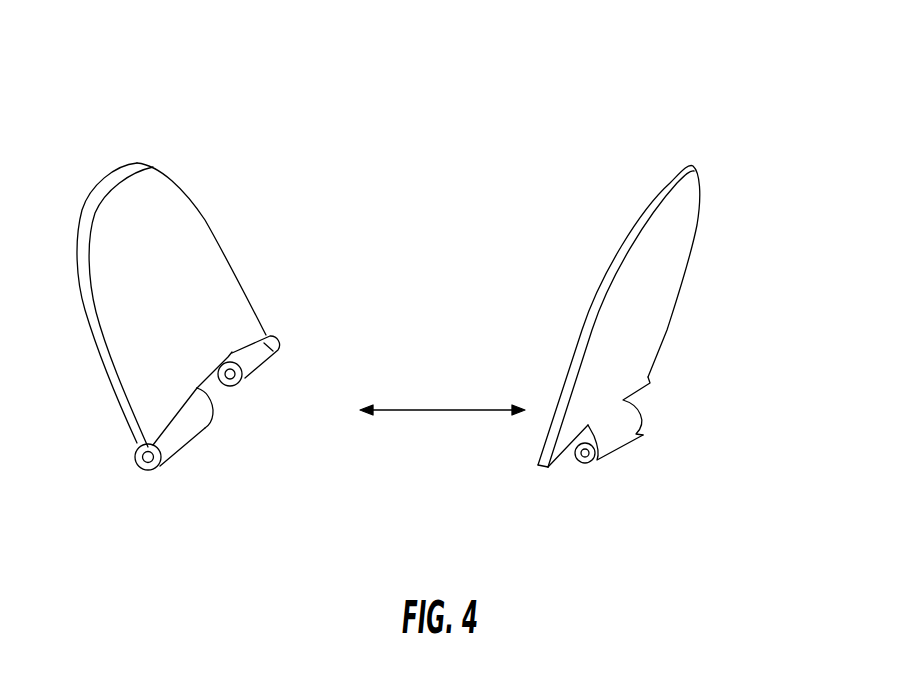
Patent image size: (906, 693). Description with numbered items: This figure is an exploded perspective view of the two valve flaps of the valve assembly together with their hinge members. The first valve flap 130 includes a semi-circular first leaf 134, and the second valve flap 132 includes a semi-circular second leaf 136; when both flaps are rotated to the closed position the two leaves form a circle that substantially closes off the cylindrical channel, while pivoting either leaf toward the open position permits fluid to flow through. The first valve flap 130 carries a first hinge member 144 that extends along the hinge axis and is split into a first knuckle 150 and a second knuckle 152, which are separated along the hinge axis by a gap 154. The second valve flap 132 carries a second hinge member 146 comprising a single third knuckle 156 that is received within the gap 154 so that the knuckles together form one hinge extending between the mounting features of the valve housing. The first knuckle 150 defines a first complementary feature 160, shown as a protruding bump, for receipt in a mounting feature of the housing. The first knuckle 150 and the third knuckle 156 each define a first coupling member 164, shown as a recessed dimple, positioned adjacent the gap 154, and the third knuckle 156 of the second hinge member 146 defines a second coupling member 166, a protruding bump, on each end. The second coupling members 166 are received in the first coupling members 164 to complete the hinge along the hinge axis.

The first valve flap 130 is at (78, 131).
The second valve flap 132 is at (673, 143).
The first leaf 134 is at (158, 197).
The second leaf 136 is at (678, 233).
The first hinge member 144 is at (195, 443).
The second hinge member 146 is at (636, 437).
The first knuckle 150 is at (172, 446).
The second knuckle 152 is at (275, 337).
The gap 154 is at (215, 390).
The third knuckle 156 is at (613, 433).
The first complementary feature 160 is at (137, 451).
The first coupling member 164 is at (243, 383).
The second coupling member 166 is at (593, 467).